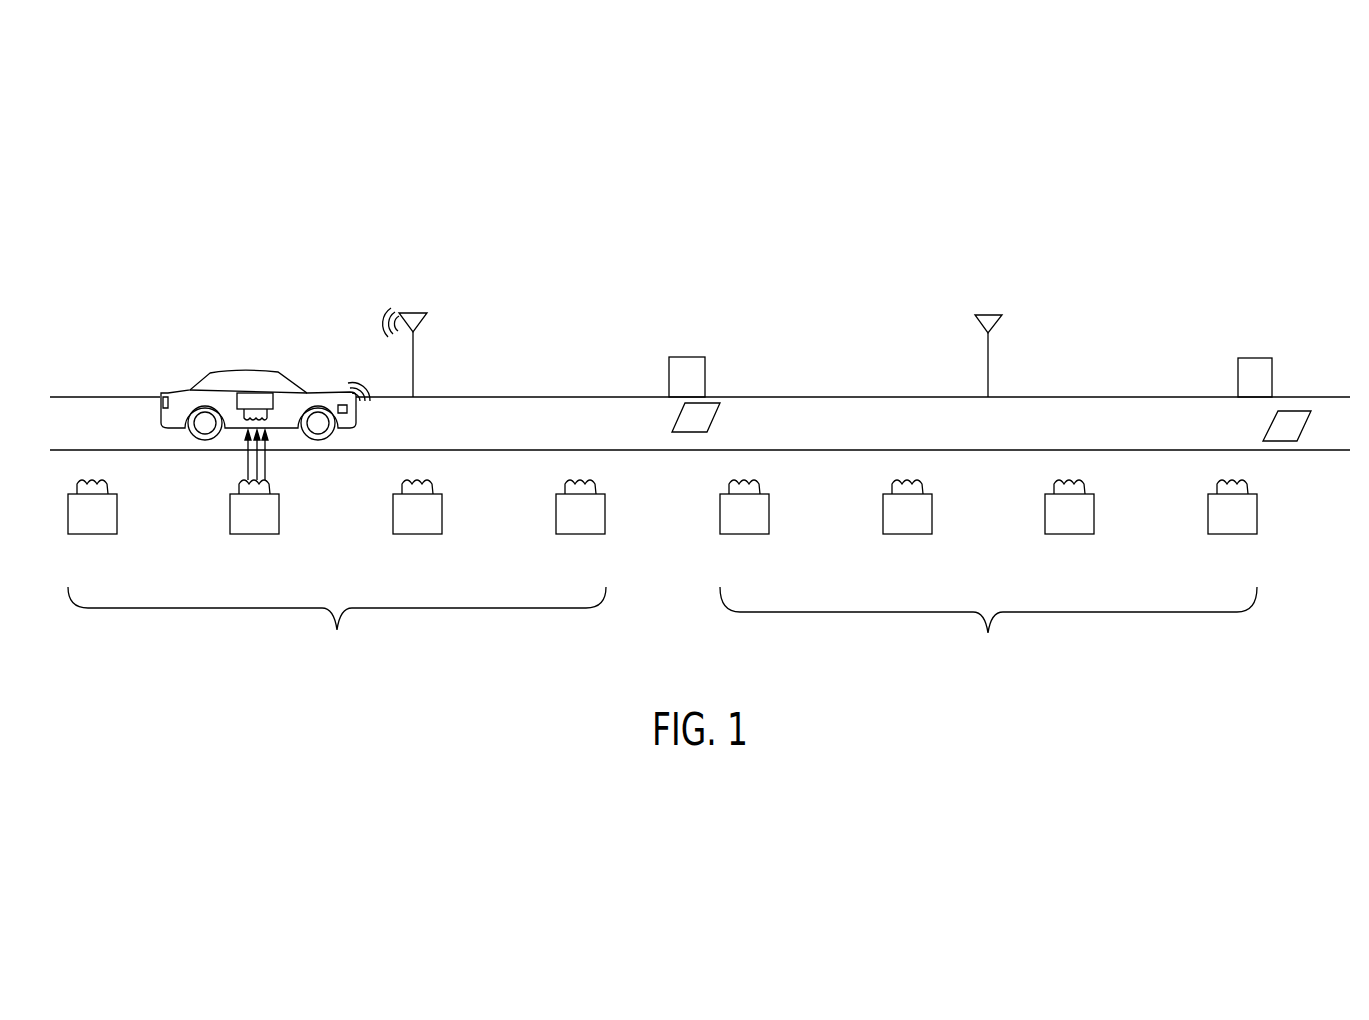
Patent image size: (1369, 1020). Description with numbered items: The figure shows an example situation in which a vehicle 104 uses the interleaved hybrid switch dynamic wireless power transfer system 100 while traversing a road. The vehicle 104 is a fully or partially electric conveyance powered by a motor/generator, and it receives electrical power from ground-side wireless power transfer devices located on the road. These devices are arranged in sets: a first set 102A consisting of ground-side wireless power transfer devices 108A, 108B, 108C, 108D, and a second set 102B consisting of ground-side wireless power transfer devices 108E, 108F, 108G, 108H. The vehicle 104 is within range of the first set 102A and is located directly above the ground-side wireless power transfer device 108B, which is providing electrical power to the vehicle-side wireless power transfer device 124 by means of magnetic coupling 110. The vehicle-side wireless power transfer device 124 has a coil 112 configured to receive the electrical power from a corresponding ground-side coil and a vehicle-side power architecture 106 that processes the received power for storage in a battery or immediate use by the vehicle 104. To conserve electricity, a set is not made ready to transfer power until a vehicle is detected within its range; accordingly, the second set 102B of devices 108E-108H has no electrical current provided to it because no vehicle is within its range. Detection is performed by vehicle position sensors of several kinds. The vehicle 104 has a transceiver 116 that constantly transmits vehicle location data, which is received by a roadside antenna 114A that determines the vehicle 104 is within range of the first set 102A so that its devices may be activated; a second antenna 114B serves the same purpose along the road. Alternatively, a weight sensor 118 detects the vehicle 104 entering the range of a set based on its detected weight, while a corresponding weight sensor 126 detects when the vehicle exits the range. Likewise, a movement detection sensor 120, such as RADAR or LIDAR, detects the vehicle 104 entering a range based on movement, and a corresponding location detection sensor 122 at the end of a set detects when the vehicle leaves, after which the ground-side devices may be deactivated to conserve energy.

The system 100 is at (142, 186).
The first set of ground-side wireless power transfer devices 102A is at (337, 627).
The second set of ground-side wireless power transfer devices 102B is at (988, 627).
The vehicle 104 is at (253, 370).
The vehicle-side power architecture 106 is at (257, 393).
The ground-side wireless power transfer device 108A is at (102, 534).
The ground-side wireless power transfer device 108B is at (264, 534).
The ground-side wireless power transfer device 108C is at (427, 534).
The ground-side wireless power transfer device 108D is at (571, 534).
The ground-side wireless power transfer device 108E is at (753, 534).
The ground-side wireless power transfer device 108F is at (916, 534).
The ground-side wireless power transfer device 108G is at (1078, 534).
The ground-side wireless power transfer device 108H is at (1224, 534).
The magnetic coupling 110 is at (245, 460).
The coil 112 is at (276, 414).
The antenna 114A is at (440, 298).
The antenna 114B is at (1016, 298).
The transceiver 116 is at (357, 411).
The weight sensor 118 is at (710, 403).
The movement detection sensor 120 is at (685, 357).
The location detection sensor 122 is at (1255, 358).
The vehicle-side wireless power transfer device 124 is at (218, 385).
The weight sensor 126 is at (1303, 411).